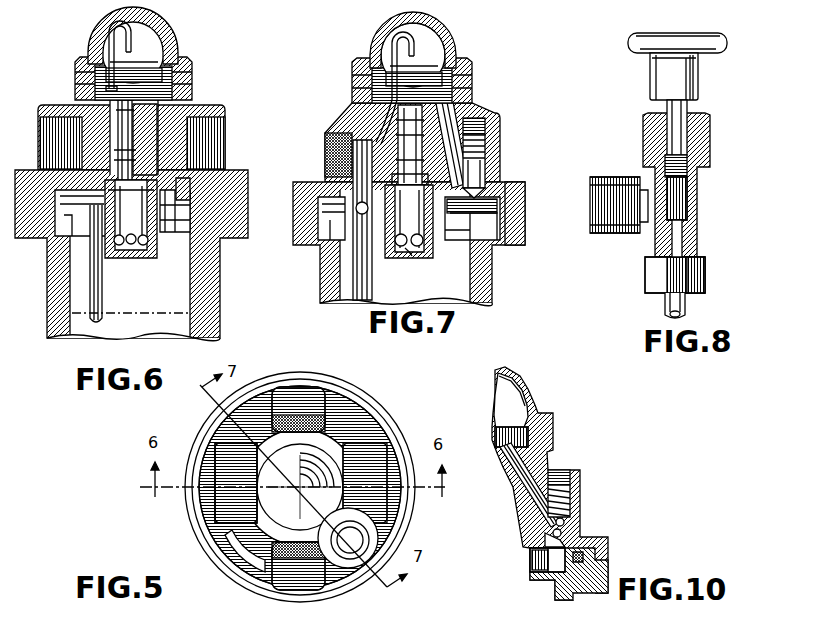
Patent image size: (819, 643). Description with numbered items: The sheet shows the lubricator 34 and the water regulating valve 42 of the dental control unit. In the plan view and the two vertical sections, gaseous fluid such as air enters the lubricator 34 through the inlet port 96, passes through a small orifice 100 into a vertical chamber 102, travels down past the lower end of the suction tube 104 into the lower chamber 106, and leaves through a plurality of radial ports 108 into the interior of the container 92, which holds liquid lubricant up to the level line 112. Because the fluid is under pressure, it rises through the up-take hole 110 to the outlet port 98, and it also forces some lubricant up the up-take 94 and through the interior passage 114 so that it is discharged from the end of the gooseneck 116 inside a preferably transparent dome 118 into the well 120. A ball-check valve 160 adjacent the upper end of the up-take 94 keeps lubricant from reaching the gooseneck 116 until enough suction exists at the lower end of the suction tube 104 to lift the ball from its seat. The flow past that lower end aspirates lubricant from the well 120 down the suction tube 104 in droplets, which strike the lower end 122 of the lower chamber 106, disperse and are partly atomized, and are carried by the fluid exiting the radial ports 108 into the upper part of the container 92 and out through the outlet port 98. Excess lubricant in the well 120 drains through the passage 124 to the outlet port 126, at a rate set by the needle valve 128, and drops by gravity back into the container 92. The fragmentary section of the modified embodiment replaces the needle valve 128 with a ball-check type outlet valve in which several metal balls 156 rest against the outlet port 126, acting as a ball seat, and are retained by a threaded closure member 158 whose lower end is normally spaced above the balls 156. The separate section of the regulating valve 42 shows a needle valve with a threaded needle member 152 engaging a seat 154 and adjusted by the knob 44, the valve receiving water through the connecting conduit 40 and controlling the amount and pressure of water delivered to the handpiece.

In FIG. 6, the lubricator 34 is at (228, 110).
In FIG. 7, the lubricator 34 is at (501, 142).
In FIG. 5, the lubricator 34 is at (352, 382).
In FIG. 10, the lubricator 34 is at (587, 524).
In FIG. 8, the connecting conduit 40 is at (684, 307).
In FIG. 8, the regulating valve 42 is at (655, 232).
In FIG. 8, the adjusting knob 44 is at (648, 42).
In FIG. 6, the container 92 is at (218, 292).
In FIG. 7, the container 92 is at (490, 298).
In FIG. 10, the container 92 is at (572, 600).
In FIG. 6, the up-take 94 is at (94, 282).
In FIG. 7, the up-take 94 is at (355, 272).
In FIG. 6, the inlet port 96 is at (52, 145).
In FIG. 5, the inlet port 96 is at (215, 500).
In FIG. 6, the outlet port 98 is at (218, 145).
In FIG. 5, the outlet port 98 is at (378, 516).
In FIG. 6, the orifice 100 is at (120, 112).
In FIG. 6, the vertical chamber 102 is at (146, 112).
In FIG. 6, the suction tube 104 is at (96, 168).
In FIG. 7, the suction tube 104 is at (398, 157).
In FIG. 6, the lower chamber 106 is at (148, 232).
In FIG. 7, the lower chamber 106 is at (393, 258).
In FIG. 6, the radial ports 108 is at (129, 250).
In FIG. 7, the radial ports 108 is at (425, 242).
In FIG. 6, the up-take hole 110 is at (186, 180).
In FIG. 6, the level line 112 is at (126, 316).
In FIG. 7, the interior passage 114 is at (370, 120).
In FIG. 6, the gooseneck 116 is at (108, 30).
In FIG. 7, the gooseneck 116 is at (382, 37).
In FIG. 6, the dome 118 is at (172, 33).
In FIG. 7, the dome 118 is at (445, 40).
In FIG. 5, the dome 118 is at (270, 507).
In FIG. 10, the dome 118 is at (522, 380).
In FIG. 6, the well 120 is at (181, 62).
In FIG. 7, the well 120 is at (455, 60).
In FIG. 7, the lower end 122 is at (414, 258).
In FIG. 7, the passage 124 is at (460, 108).
In FIG. 10, the passage 124 is at (545, 466).
In FIG. 7, the outlet port 126 is at (506, 196).
In FIG. 10, the outlet port 126 is at (548, 538).
In FIG. 7, the needle valve 128 is at (483, 168).
In FIG. 5, the needle valve 128 is at (344, 558).
In FIG. 8, the threaded needle member 152 is at (681, 202).
In FIG. 8, the seat 154 is at (688, 229).
In FIG. 10, the metal balls 156 is at (553, 531).
In FIG. 10, the threaded closure member 158 is at (567, 514).
In FIG. 7, the ball-check valve 160 is at (335, 190).